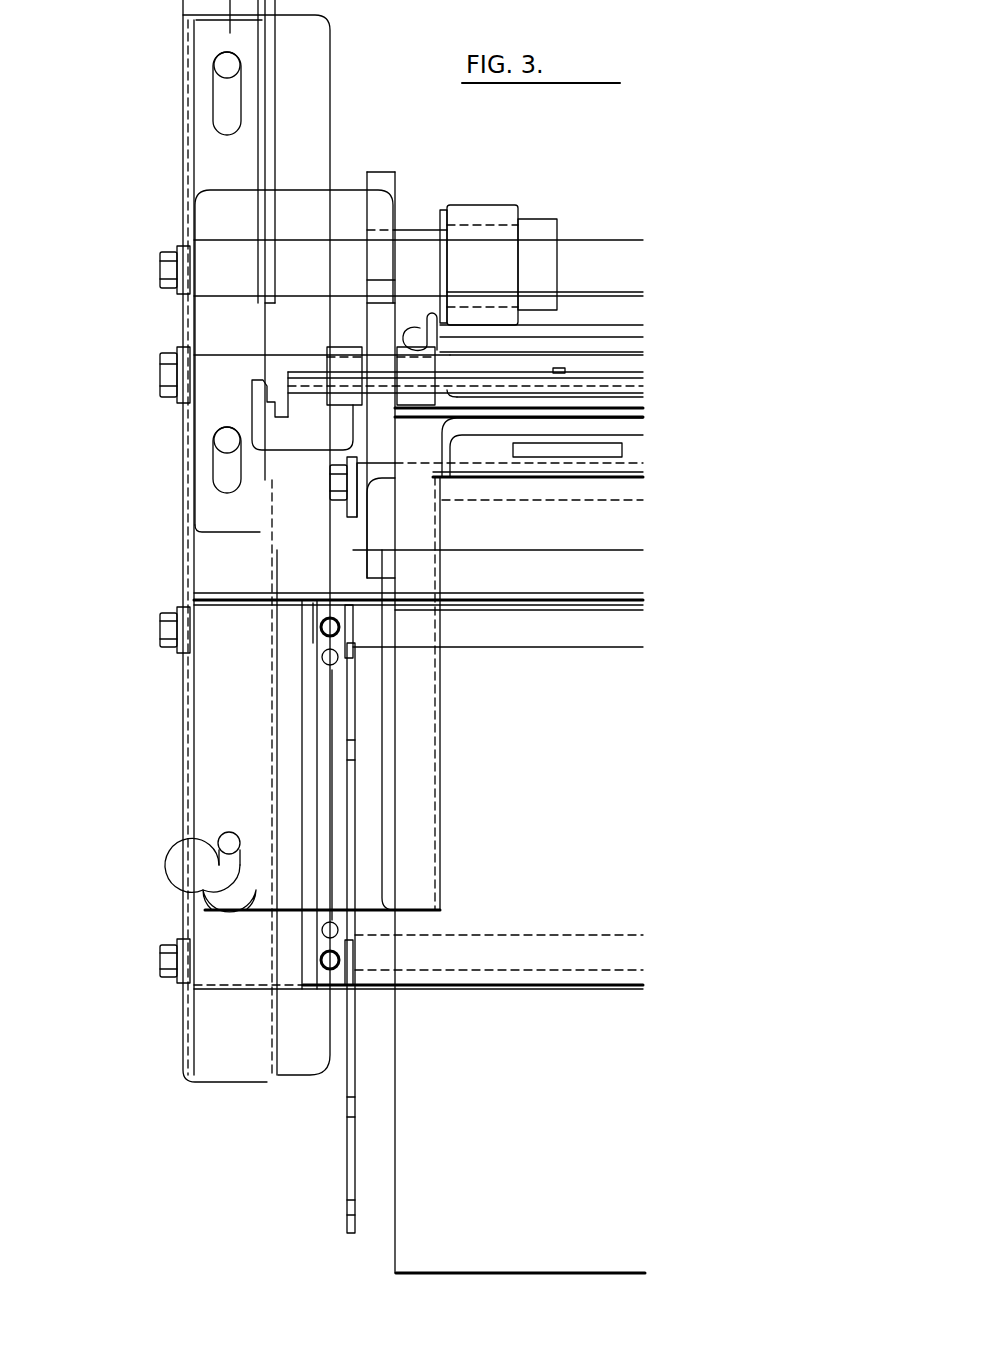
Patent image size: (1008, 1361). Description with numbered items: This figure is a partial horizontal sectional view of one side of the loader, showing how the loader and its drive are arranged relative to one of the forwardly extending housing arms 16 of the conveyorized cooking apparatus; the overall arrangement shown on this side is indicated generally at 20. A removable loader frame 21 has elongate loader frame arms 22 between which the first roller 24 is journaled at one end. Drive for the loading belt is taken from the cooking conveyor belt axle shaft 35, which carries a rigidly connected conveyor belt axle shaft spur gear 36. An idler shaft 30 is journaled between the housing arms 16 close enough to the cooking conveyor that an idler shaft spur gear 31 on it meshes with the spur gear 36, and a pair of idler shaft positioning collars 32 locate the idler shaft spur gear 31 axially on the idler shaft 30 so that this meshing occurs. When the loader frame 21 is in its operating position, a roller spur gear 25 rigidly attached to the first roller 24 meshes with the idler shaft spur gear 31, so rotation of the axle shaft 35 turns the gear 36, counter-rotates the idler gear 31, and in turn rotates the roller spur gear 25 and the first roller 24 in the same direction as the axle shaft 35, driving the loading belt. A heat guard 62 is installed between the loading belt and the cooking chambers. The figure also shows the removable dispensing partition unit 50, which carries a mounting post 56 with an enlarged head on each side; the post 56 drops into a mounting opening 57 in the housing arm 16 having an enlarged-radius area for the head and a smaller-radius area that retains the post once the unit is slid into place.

The forwardly extending housing arms 16 is at (212, 1087).
The mounting assembly 20 is at (147, 535).
The loader frame 21 is at (340, 675).
The loader frame arms 22 is at (357, 1148).
The first roller 24 is at (572, 532).
The roller spur gear 25 is at (367, 542).
The idler shaft 30 is at (200, 380).
The idler shaft spur gear 31 is at (363, 422).
The idler shaft positioning collars 32 is at (407, 352).
The cooking conveyor belt axle shaft 35 is at (628, 267).
The conveyor belt axle shaft spur gear 36 is at (380, 183).
The dispensing partition unit 50 is at (420, 880).
The mounting posts 56 is at (218, 843).
The mounting openings 57 is at (228, 888).
The heat guard 62 is at (625, 377).